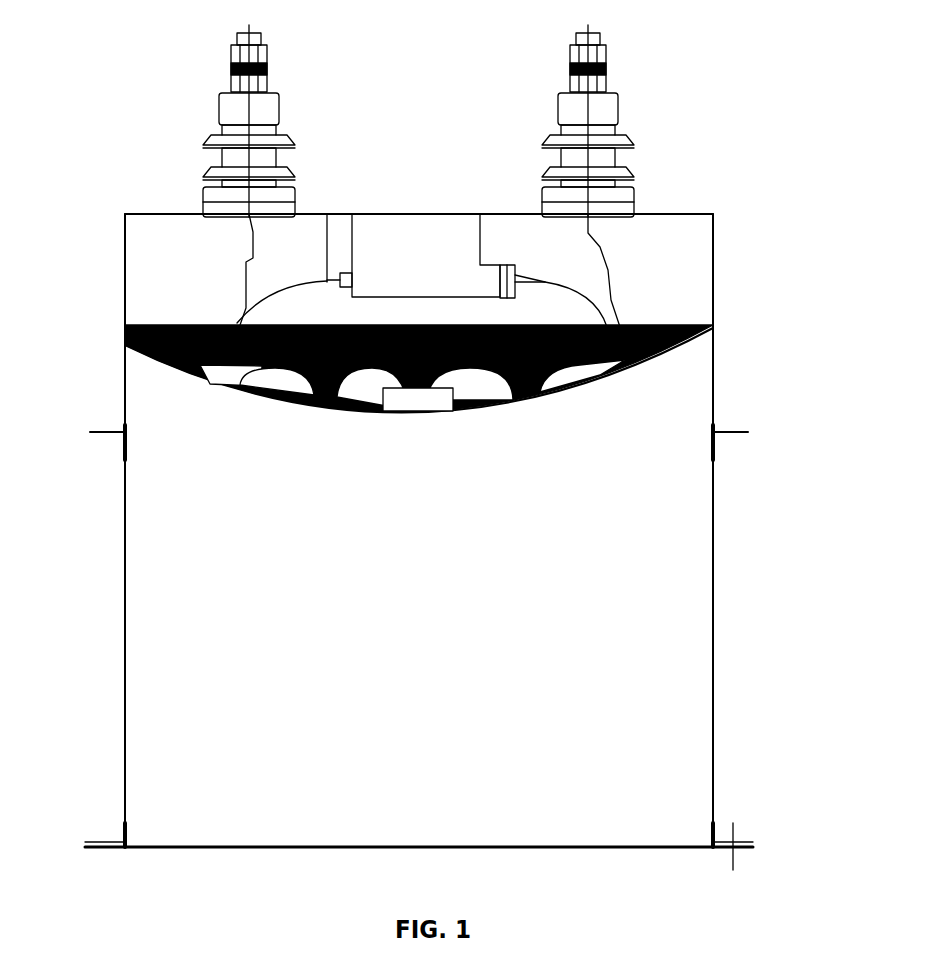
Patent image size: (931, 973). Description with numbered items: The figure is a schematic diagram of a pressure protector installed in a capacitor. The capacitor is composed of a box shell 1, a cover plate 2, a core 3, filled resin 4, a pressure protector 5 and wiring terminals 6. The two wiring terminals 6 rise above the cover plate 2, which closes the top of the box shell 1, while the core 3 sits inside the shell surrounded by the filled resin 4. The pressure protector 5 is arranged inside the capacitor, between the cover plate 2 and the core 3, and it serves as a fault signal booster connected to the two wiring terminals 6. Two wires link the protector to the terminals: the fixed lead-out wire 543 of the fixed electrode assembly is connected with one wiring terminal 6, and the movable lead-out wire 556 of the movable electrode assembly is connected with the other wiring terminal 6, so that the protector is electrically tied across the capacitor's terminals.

The box shell 1 is at (407, 542).
The cover plate 2 is at (387, 149).
The core 3 is at (341, 376).
The filled resin 4 is at (384, 334).
The pressure protector 5 is at (428, 218).
The wiring terminals 6 is at (350, 108).
The fixed lead-out wire 543 is at (369, 195).
The movable lead-out wire 556 is at (664, 195).